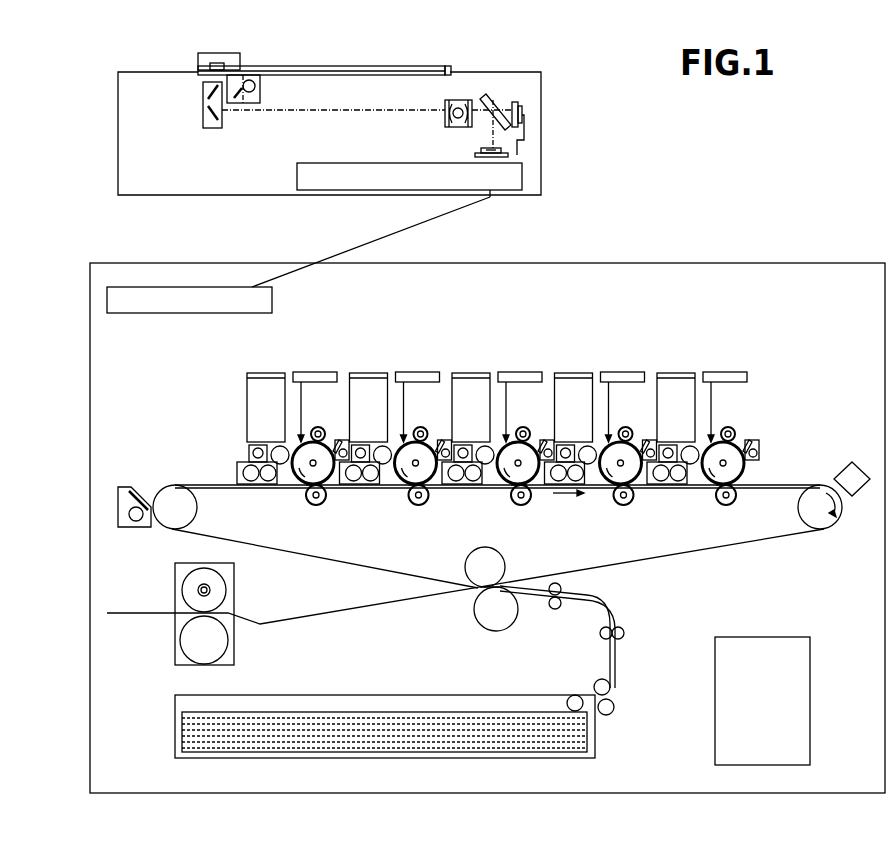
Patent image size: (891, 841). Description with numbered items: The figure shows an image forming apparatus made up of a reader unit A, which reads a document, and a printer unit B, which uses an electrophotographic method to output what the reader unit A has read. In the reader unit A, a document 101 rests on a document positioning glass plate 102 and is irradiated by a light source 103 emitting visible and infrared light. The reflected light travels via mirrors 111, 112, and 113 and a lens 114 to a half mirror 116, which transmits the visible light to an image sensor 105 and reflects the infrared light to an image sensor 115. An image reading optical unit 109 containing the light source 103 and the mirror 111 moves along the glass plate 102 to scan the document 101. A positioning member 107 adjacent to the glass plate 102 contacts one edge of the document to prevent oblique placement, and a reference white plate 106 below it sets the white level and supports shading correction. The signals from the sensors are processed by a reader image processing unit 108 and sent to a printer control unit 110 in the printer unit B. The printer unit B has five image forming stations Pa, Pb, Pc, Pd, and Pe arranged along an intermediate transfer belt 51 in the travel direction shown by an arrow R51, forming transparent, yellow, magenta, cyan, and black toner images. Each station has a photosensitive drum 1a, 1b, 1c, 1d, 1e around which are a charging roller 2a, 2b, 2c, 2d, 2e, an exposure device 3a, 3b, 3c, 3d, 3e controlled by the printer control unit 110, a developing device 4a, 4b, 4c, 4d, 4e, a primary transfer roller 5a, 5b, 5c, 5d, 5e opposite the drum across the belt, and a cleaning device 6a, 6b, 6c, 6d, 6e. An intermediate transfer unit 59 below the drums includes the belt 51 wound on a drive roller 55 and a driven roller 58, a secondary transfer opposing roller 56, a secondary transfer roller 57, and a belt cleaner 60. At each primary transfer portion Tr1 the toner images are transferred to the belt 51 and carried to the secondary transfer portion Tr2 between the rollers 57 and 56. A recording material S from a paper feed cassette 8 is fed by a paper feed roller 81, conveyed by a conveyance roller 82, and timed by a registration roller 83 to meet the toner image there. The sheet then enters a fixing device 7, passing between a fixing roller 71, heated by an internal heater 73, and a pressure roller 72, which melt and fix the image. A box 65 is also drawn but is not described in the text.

The reader unit A is at (530, 72).
The printer unit B is at (758, 263).
The document 101 is at (404, 65).
The document positioning glass plate 102 is at (447, 66).
The light source 103 is at (251, 81).
The image sensor 105 is at (525, 106).
The reference white plate 106 is at (198, 60).
The positioning member 107 is at (235, 53).
The reader image processing unit 108 is at (522, 172).
The image reading optical unit 109 is at (247, 103).
The printer control unit 110 is at (152, 313).
The mirror 111 is at (256, 104).
The mirror 112 is at (205, 88).
The mirror 113 is at (205, 114).
The lens 114 is at (462, 100).
The image sensor 115 is at (515, 157).
The half mirror 116 is at (497, 99).
The image forming station Pa is at (292, 352).
The image forming station Pb is at (380, 376).
The image forming station Pc is at (482, 376).
The image forming station Pd is at (585, 376).
The image forming station Pe is at (687, 376).
The photosensitive drum 1a is at (308, 440).
The photosensitive drum 1b is at (416, 434).
The photosensitive drum 1c is at (518, 434).
The photosensitive drum 1d is at (621, 434).
The photosensitive drum 1e is at (723, 434).
The charging roller 2a is at (317, 427).
The charging roller 2b is at (427, 418).
The charging roller 2c is at (529, 418).
The charging roller 2d is at (632, 418).
The charging roller 2e is at (734, 418).
The exposure device 3a is at (313, 372).
The exposure device 3b is at (418, 391).
The exposure device 3c is at (520, 391).
The exposure device 3d is at (623, 391).
The exposure device 3e is at (725, 391).
The developing device 4a is at (287, 463).
The developing device 4b is at (366, 485).
The developing device 4c is at (468, 485).
The developing device 4d is at (571, 485).
The developing device 4e is at (673, 485).
The primary transfer roller 5a is at (322, 504).
The primary transfer roller 5b is at (427, 510).
The primary transfer roller 5c is at (529, 510).
The primary transfer roller 5d is at (632, 510).
The primary transfer roller 5e is at (734, 510).
The cleaning device 6a is at (345, 439).
The cleaning device 6b is at (443, 436).
The cleaning device 6c is at (545, 436).
The cleaning device 6d is at (648, 436).
The cleaning device 6e is at (750, 436).
The primary transfer portion Tr1 is at (307, 479).
The secondary transfer portion Tr2 is at (478, 590).
The fixing device 7 is at (175, 640).
The paper feed cassette 8 is at (392, 695).
The recording material S is at (343, 714).
The intermediate transfer belt 51 is at (336, 560).
The drive roller 55 is at (820, 530).
The secondary transfer opposing roller 56 is at (470, 562).
The secondary transfer roller 57 is at (496, 632).
The driven roller 58 is at (172, 520).
The intermediate transfer unit 59 is at (707, 553).
The belt cleaner 60 is at (131, 486).
The toner container 65 is at (810, 690).
The fixing roller 71 is at (224, 580).
The pressure roller 72 is at (230, 640).
The heater 73 is at (212, 590).
The paper feed roller 81 is at (570, 698).
The conveyance roller 82 is at (624, 634).
The registration roller 83 is at (562, 588).
The arrow R51 is at (564, 504).